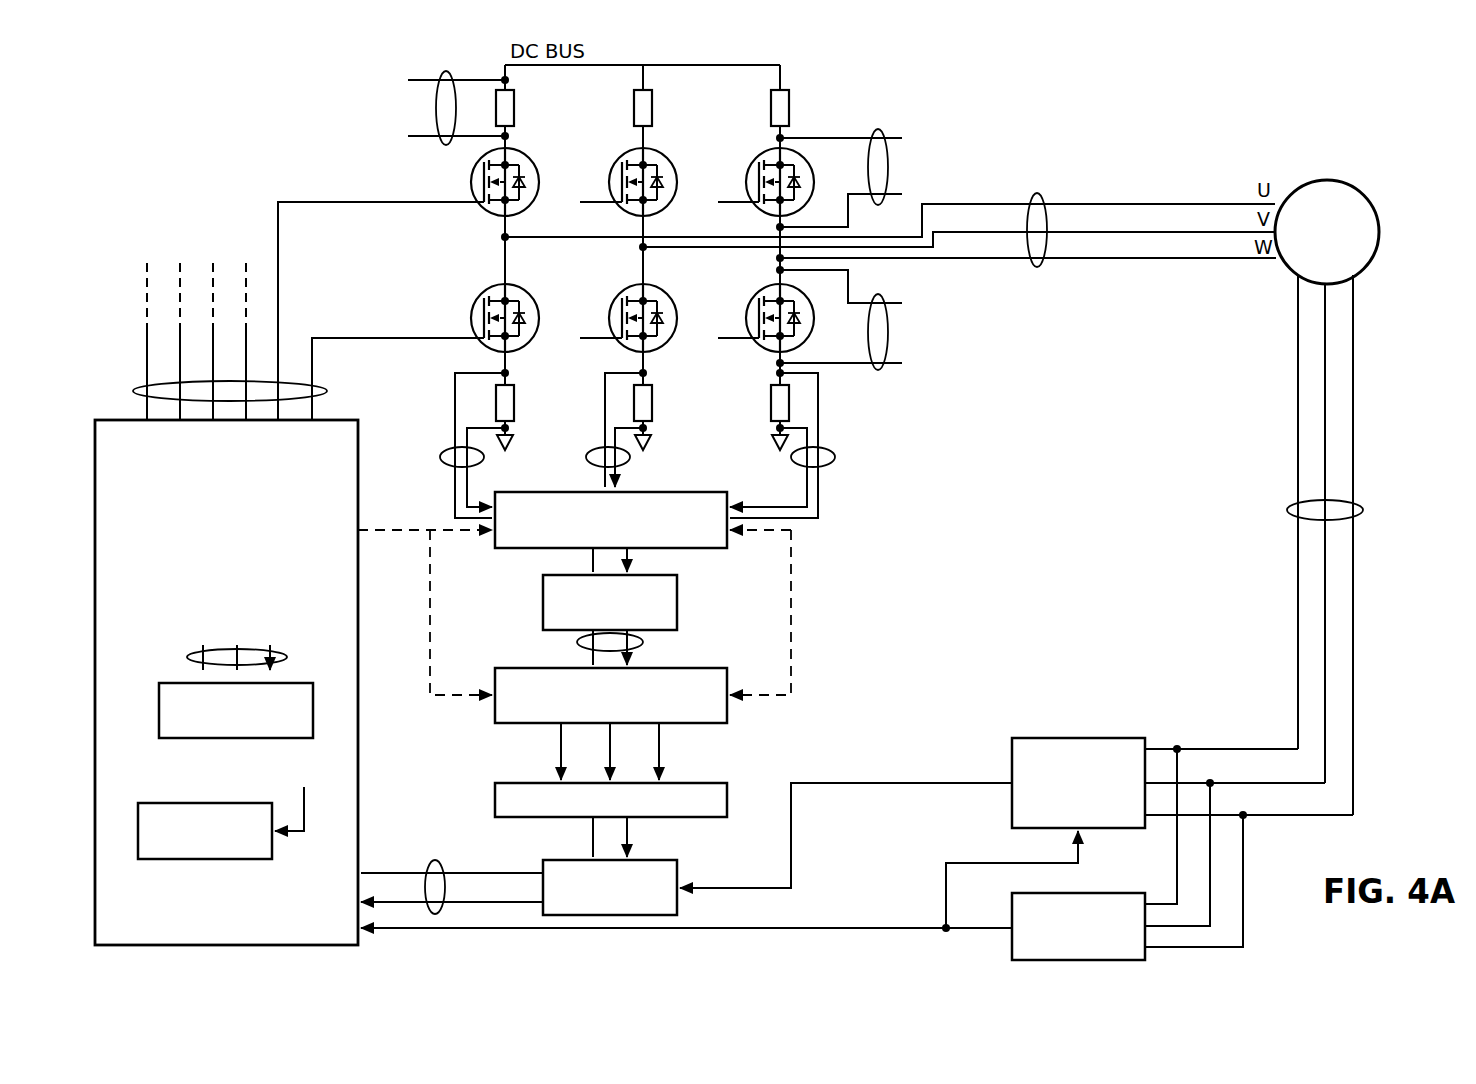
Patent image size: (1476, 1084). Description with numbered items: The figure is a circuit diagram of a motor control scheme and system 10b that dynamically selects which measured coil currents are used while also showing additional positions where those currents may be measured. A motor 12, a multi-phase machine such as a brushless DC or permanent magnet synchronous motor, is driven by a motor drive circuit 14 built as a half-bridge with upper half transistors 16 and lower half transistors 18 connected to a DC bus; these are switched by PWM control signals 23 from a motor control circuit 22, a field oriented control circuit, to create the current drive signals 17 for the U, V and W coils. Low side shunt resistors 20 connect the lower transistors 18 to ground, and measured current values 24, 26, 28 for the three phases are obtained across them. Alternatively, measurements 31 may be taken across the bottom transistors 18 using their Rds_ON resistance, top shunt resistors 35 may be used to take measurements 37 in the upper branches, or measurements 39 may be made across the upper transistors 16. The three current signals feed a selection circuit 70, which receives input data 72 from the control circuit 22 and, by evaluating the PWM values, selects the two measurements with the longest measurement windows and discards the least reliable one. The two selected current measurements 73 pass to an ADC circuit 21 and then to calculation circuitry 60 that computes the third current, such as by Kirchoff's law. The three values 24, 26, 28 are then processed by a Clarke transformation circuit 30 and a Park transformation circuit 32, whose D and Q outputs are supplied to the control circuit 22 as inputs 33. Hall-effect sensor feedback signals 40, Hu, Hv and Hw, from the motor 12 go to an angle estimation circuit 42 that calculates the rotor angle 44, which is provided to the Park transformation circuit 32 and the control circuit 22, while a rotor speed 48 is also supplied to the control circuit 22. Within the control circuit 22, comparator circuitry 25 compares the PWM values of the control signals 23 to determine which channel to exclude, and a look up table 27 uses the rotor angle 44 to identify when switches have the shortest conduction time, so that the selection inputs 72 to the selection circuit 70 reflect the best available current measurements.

The motor control scheme and system 10b is at (1342, 108).
The motor 12 is at (1378, 232).
The motor drive circuit 14 is at (840, 102).
The upper half transistors 16 is at (537, 194).
The current drive signals 17 is at (1037, 267).
The lower half transistors 18 is at (537, 330).
The shunt resistors 20 is at (514, 400).
The ADC circuit 21 is at (677, 604).
The motor control circuit 22 is at (358, 488).
The control signals 23 is at (327, 391).
The measured current value for coil U 24 is at (440, 457).
The comparator circuitry 25 is at (175, 683).
The measured current value for coil V 26 is at (588, 457).
The look up table 27 is at (155, 803).
The measured current value for coil W 28 is at (834, 457).
The Clarke transformation circuit 30 is at (727, 795).
The measurements across bottom transistors 31 is at (880, 370).
The Park transformation circuit 32 is at (677, 874).
The inputs to the field oriented control circuit 33 is at (435, 860).
The top shunt resistors 35 is at (514, 107).
The measurements across top shunt resistors 37 is at (448, 148).
The measurements across top transistors 39 is at (880, 130).
The sensor feedback signals 40 is at (1287, 510).
The angle estimation circuit 42 is at (1020, 738).
The rotor angle 44 is at (840, 783).
The rotor speed 48 is at (750, 928).
The calculation circuitry 60 is at (727, 678).
The selection circuit 70 is at (704, 492).
The input data 72 is at (405, 530).
The selected current measurements 73 is at (577, 642).